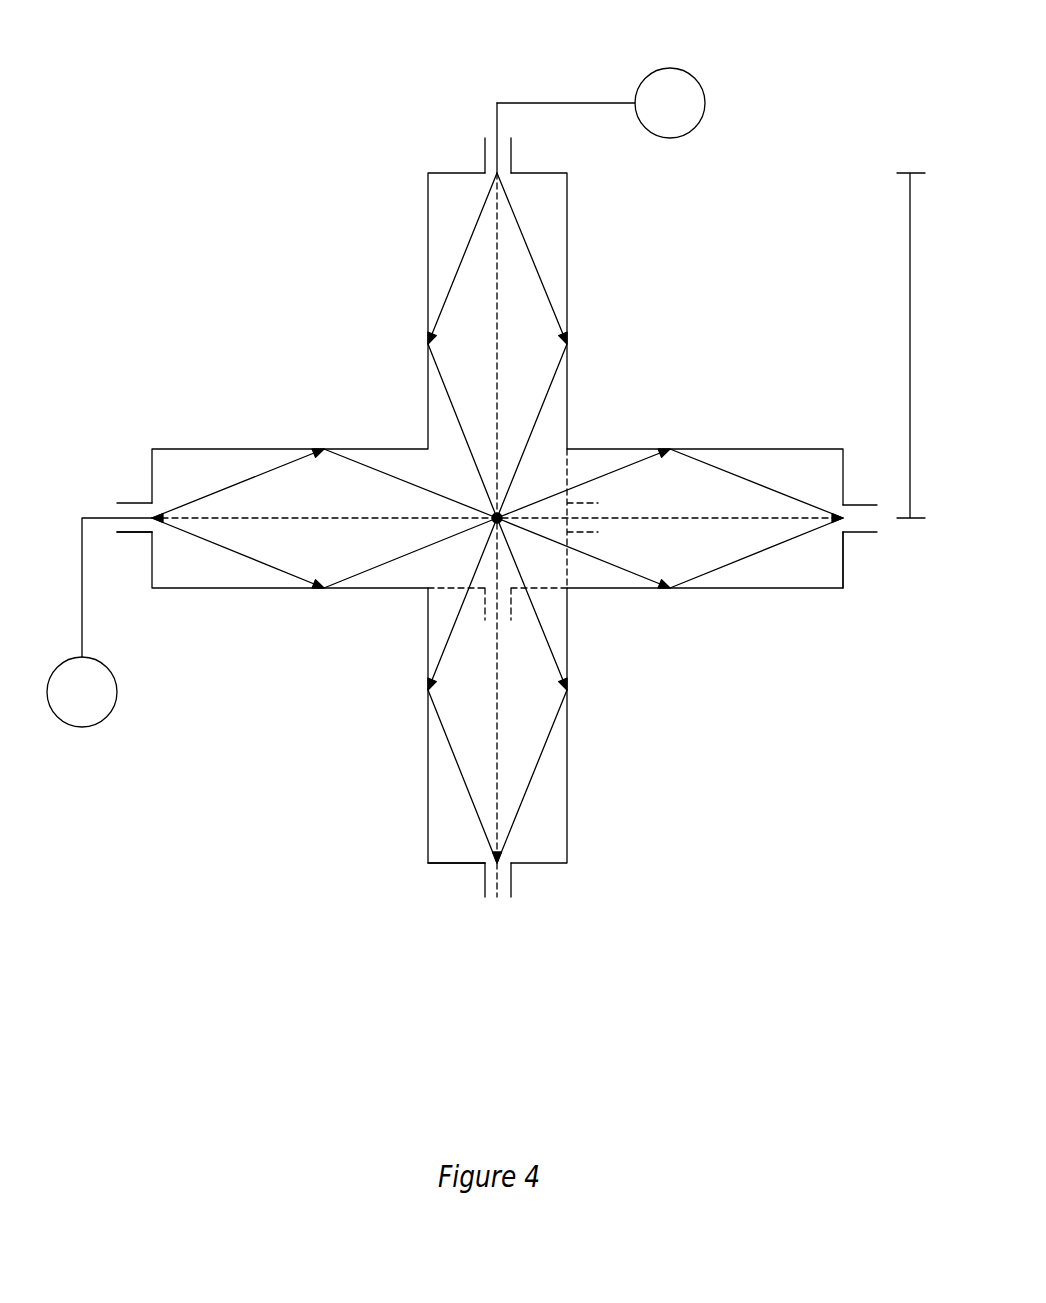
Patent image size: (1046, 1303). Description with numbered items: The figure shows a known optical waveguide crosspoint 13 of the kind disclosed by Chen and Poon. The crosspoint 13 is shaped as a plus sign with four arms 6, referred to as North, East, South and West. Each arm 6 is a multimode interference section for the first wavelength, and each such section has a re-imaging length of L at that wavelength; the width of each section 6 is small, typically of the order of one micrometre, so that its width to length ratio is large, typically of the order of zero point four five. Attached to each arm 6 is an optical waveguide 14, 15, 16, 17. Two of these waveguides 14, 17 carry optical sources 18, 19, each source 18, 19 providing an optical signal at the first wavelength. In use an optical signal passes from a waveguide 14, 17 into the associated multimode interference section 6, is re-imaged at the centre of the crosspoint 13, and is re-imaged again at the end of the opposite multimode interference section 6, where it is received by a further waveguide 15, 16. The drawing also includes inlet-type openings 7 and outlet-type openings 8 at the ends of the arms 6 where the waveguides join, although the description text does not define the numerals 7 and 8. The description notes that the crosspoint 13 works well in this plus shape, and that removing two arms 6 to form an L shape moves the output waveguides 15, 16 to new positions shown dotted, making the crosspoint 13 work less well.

The arm 6 is at (570, 277).
The inlet slot 7 is at (440, 168).
The outlet slot 8 is at (855, 573).
The optical waveguide crosspoint 13 is at (230, 248).
The optical waveguide 14 is at (480, 147).
The optical waveguide 15 is at (862, 493).
The optical waveguide 16 is at (518, 888).
The optical waveguide 17 is at (125, 537).
The optical source 18 is at (601, 103).
The optical source 19 is at (99, 622).